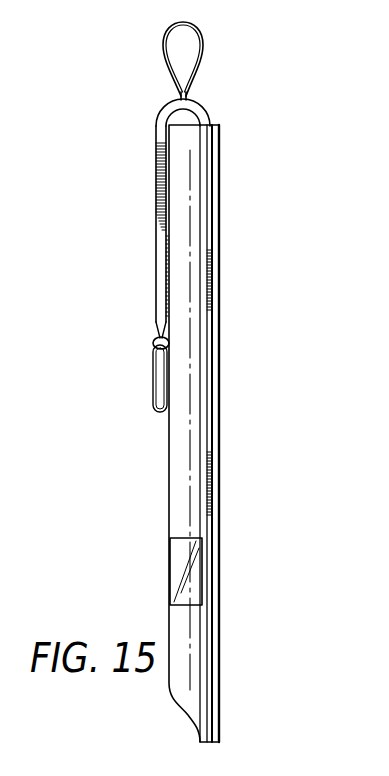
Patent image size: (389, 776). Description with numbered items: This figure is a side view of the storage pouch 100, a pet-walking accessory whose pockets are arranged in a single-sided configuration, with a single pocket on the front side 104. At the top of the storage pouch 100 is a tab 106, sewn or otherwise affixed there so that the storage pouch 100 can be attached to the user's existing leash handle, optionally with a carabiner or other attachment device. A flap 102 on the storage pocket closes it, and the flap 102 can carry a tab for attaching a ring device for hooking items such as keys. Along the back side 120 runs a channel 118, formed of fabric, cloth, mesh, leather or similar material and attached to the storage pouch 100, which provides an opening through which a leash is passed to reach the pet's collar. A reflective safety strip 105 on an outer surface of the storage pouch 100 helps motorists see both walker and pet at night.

The storage pouch 100 is at (243, 174).
The flap 102 is at (156, 188).
The front side 104 is at (169, 445).
The reflective safety strip 105 is at (170, 570).
The tab 106 is at (163, 41).
The channel 118 is at (220, 327).
The back side 120 is at (208, 420).